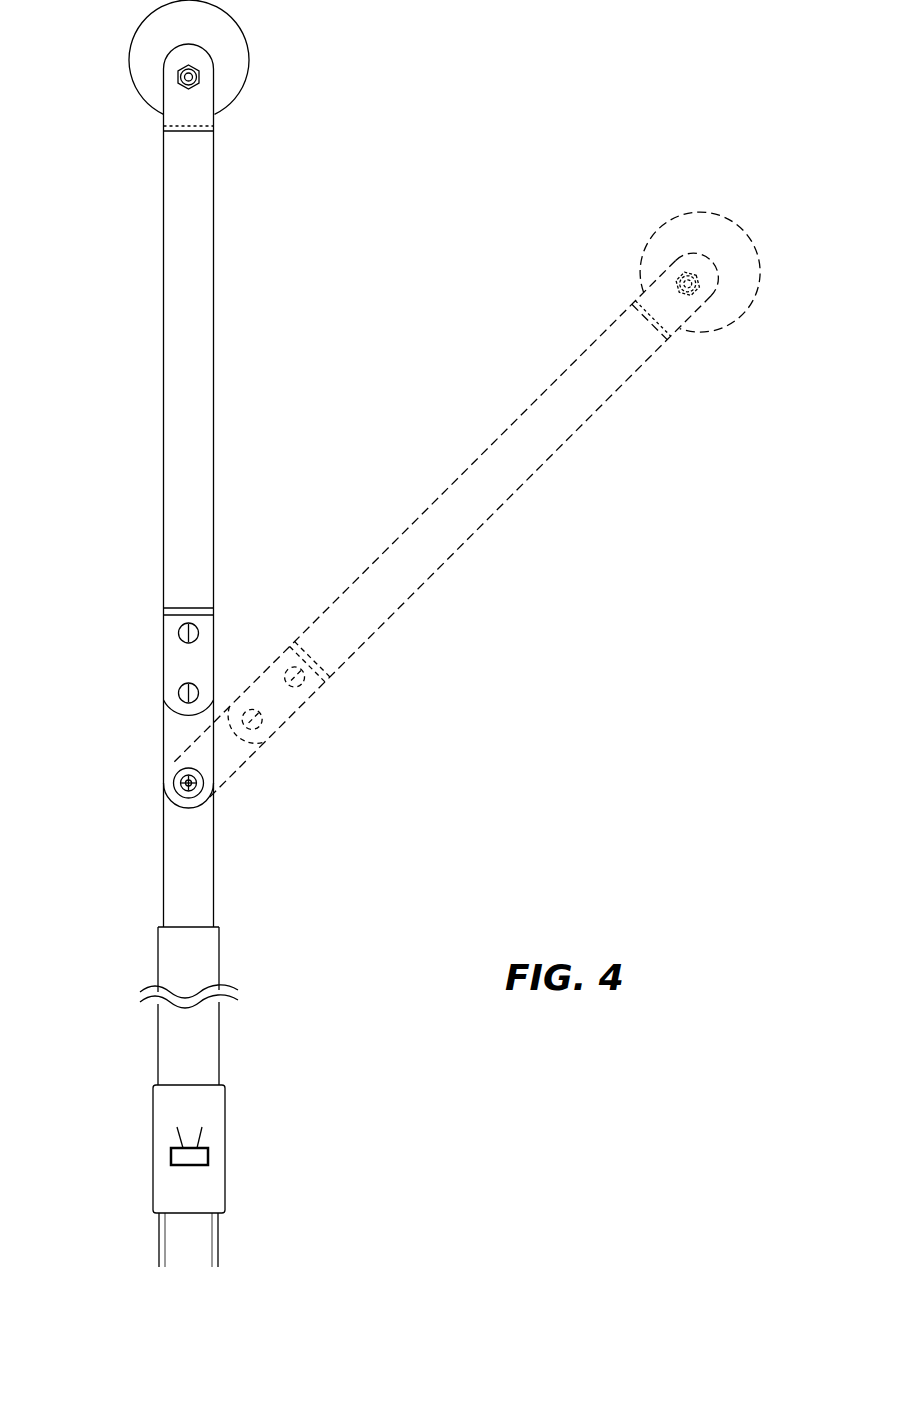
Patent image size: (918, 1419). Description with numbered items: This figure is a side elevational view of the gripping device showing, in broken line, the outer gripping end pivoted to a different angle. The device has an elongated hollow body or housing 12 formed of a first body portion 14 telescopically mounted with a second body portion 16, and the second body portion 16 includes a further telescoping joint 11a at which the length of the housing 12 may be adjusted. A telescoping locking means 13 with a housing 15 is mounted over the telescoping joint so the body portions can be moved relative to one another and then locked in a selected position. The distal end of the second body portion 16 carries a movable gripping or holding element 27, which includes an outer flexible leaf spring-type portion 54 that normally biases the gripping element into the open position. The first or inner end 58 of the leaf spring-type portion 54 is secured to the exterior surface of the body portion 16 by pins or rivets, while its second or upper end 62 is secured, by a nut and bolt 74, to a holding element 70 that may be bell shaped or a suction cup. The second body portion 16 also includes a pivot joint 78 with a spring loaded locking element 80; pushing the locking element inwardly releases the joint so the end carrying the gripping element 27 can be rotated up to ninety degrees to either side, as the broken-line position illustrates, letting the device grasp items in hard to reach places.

The joint 11a is at (187, 935).
The elongated hollow body or housing 12 is at (138, 968).
The telescoping locking means or mechanism 13 is at (143, 1132).
The first body portion 14 is at (158, 1240).
The housing 15 is at (226, 1129).
The second body portion 16 is at (180, 863).
The gripping or holding element 27 is at (176, 392).
The outer flexible leaf spring-type portion 54 is at (165, 240).
The first or inner end 58 is at (180, 665).
The second or upper end 62 is at (220, 115).
The holding element 70 is at (232, 61).
The nut and bolt 74 is at (192, 83).
The pivot joint 78 is at (216, 783).
The spring loaded locking screw or element 80 is at (173, 782).